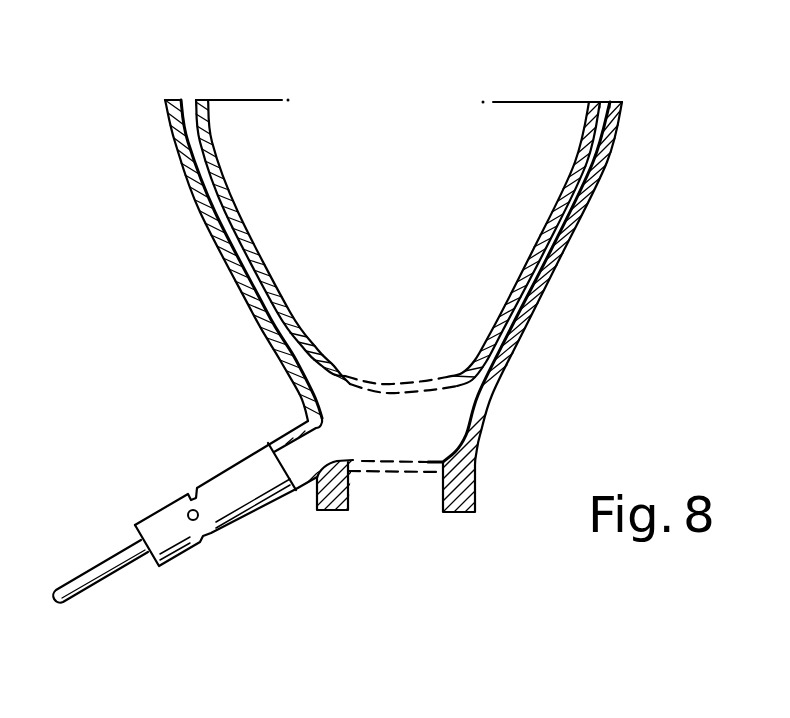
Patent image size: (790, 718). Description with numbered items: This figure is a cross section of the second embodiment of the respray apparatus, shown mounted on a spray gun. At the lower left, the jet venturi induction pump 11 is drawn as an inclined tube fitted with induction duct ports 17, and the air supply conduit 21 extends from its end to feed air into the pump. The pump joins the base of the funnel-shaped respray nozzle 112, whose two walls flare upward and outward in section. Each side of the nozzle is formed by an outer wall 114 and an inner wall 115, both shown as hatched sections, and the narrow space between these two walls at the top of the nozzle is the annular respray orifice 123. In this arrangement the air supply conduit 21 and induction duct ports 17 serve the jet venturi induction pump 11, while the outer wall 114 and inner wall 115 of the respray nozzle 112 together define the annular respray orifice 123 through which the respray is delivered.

The jet venturi induction pump 11 is at (230, 469).
The induction duct ports 17 is at (188, 496).
The air supply conduit 21 is at (93, 585).
The respray nozzle 112 is at (237, 285).
The outer wall 114 is at (190, 173).
The inner wall 115 is at (221, 162).
The annular respray orifice 123 is at (185, 107).